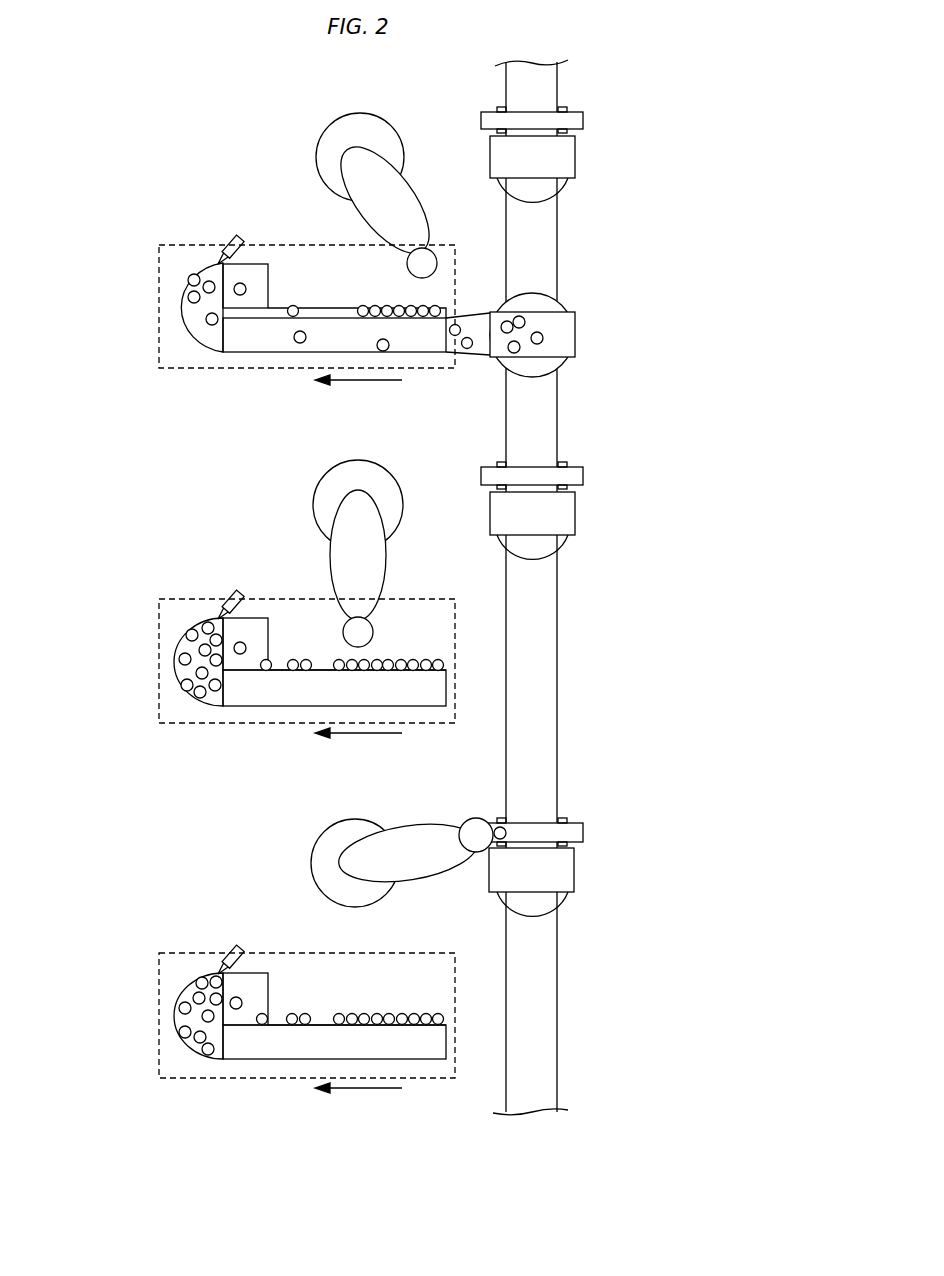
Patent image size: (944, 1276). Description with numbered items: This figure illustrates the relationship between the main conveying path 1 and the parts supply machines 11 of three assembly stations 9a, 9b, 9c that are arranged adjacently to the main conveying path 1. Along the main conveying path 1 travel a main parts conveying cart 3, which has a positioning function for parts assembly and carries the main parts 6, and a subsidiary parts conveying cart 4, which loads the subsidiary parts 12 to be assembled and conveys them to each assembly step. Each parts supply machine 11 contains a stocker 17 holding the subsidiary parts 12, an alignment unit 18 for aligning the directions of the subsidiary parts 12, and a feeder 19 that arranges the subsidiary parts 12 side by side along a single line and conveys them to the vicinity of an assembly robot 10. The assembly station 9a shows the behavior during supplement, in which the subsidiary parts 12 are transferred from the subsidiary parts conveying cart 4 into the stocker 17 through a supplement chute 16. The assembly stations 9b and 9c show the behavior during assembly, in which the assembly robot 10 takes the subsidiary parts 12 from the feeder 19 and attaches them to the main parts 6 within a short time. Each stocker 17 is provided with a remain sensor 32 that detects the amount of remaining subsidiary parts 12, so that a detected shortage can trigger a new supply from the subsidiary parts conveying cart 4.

The main conveying path 1 is at (552, 645).
The main parts conveying cart 3 is at (575, 512).
The subsidiary parts conveying cart 4 is at (532, 372).
The main parts 6 is at (583, 120).
The assembly station 9a is at (128, 245).
The assembly station 9b is at (128, 659).
The assembly station 9c is at (128, 1004).
The assembly robot 10 is at (320, 141).
The parts supply machine 11 is at (332, 620).
The subsidiary parts 12 is at (190, 297).
The supplement chute 16 is at (270, 348).
The stocker 17 is at (208, 348).
The alignment unit 18 is at (268, 277).
The feeder 19 is at (330, 307).
The remain sensor 32 is at (240, 233).